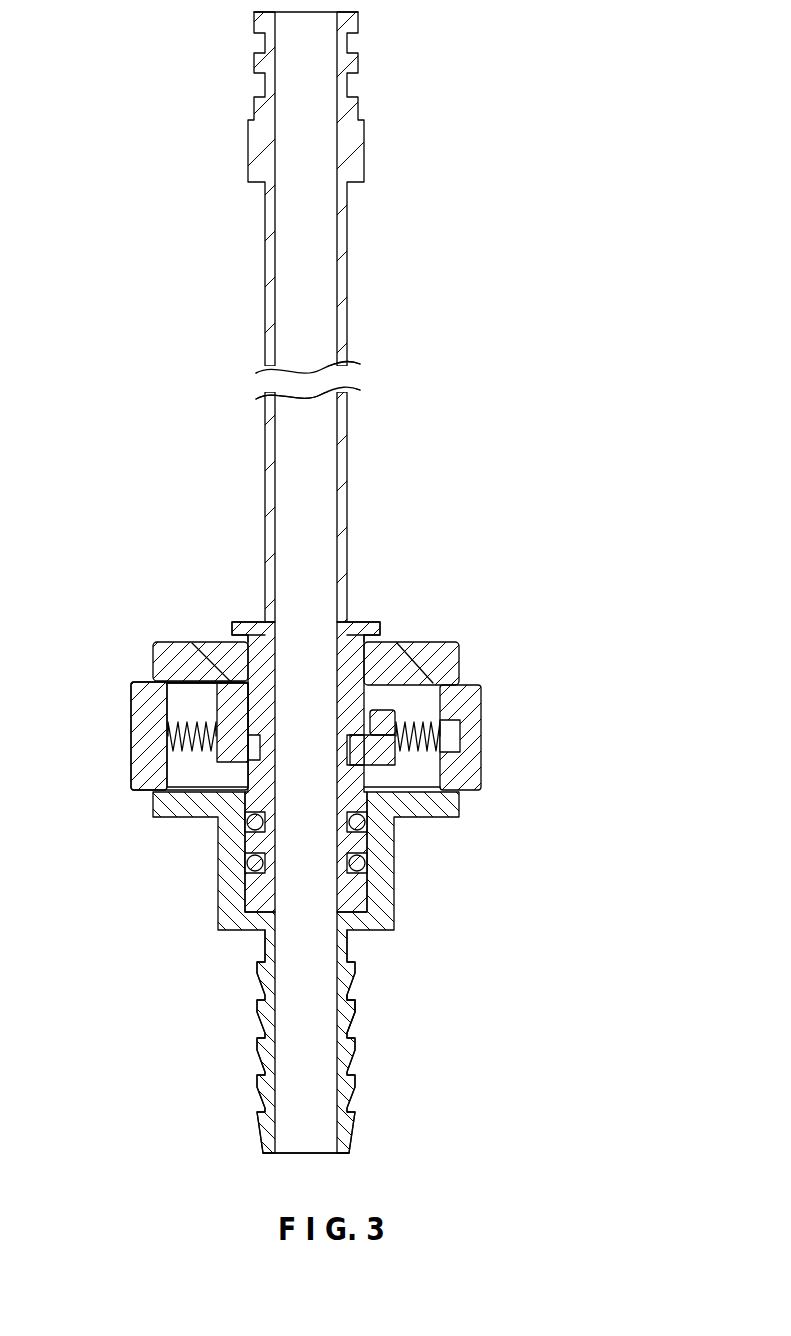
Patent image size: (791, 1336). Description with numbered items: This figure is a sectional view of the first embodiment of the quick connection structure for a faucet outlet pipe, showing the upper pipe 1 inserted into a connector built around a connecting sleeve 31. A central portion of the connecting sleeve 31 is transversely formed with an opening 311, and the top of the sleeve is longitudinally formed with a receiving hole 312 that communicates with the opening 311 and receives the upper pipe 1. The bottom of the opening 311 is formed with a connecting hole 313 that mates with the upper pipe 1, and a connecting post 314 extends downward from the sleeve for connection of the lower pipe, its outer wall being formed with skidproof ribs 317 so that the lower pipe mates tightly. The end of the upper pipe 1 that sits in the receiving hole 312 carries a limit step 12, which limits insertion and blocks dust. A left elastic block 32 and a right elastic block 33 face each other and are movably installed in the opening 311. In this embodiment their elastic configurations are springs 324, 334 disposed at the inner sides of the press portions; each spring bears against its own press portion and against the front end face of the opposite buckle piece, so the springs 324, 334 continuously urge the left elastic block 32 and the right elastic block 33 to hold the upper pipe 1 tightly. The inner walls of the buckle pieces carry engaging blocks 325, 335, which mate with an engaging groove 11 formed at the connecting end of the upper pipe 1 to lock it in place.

The upper pipe 1 is at (347, 316).
The engaging groove 11 is at (365, 735).
The limit step 12 is at (367, 623).
The connecting sleeve 31 is at (442, 663).
The opening 311 is at (158, 668).
The receiving hole 312 is at (240, 668).
The connecting hole 313 is at (240, 796).
The connecting post 314 is at (338, 1067).
The skidproof ribs 317 is at (355, 1002).
The left elastic block 32 is at (137, 742).
The spring 324 is at (173, 720).
The engaging block 325 is at (367, 758).
The right elastic block 33 is at (478, 738).
The spring 334 is at (422, 721).
The engaging block 335 is at (193, 682).